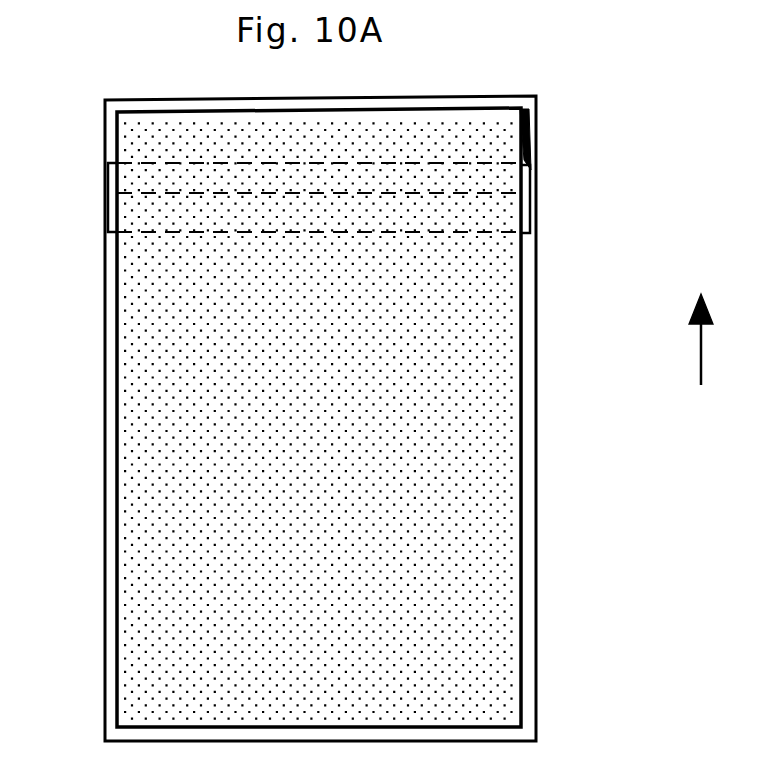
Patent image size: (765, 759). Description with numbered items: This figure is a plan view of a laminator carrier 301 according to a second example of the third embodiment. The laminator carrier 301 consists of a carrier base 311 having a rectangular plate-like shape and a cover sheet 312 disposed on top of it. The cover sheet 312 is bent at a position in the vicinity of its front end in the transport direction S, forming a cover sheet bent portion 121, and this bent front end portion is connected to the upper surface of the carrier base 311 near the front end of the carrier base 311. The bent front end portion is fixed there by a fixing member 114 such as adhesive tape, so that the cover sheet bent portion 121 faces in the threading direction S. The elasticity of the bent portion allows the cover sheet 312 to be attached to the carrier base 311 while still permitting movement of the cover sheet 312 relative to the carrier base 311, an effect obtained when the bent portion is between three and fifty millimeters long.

The fixing member 114 is at (110, 207).
The cover sheet bent portion 121 is at (533, 152).
The laminator carrier 301 is at (538, 243).
The carrier base 311 is at (529, 615).
The cover sheet 312 is at (509, 489).
The transport direction S is at (701, 371).